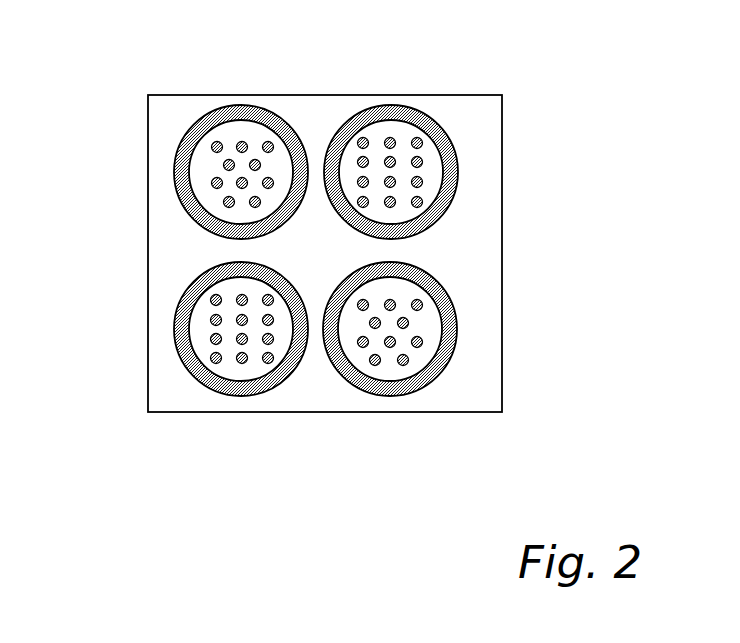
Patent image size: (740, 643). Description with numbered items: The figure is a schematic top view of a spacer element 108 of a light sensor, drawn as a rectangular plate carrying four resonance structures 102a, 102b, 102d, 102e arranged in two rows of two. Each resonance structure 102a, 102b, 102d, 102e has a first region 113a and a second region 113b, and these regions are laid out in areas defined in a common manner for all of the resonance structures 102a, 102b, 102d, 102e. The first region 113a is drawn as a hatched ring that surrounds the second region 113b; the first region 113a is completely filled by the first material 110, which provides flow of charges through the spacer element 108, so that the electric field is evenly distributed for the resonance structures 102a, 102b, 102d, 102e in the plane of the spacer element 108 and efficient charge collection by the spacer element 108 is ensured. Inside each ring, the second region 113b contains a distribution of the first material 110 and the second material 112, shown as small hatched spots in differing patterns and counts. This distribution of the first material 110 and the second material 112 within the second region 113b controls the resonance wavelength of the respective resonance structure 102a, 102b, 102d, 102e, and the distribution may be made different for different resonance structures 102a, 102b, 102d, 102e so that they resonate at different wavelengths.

The spacer element 108 is at (157, 254).
The resonance structure 102a is at (218, 141).
The resonance structure 102b is at (449, 141).
The resonance structure 102d is at (195, 392).
The resonance structure 102e is at (338, 390).
The first material 110 is at (433, 180).
The second material 112 is at (433, 163).
The first region 113a is at (193, 118).
The second region 113b is at (196, 172).